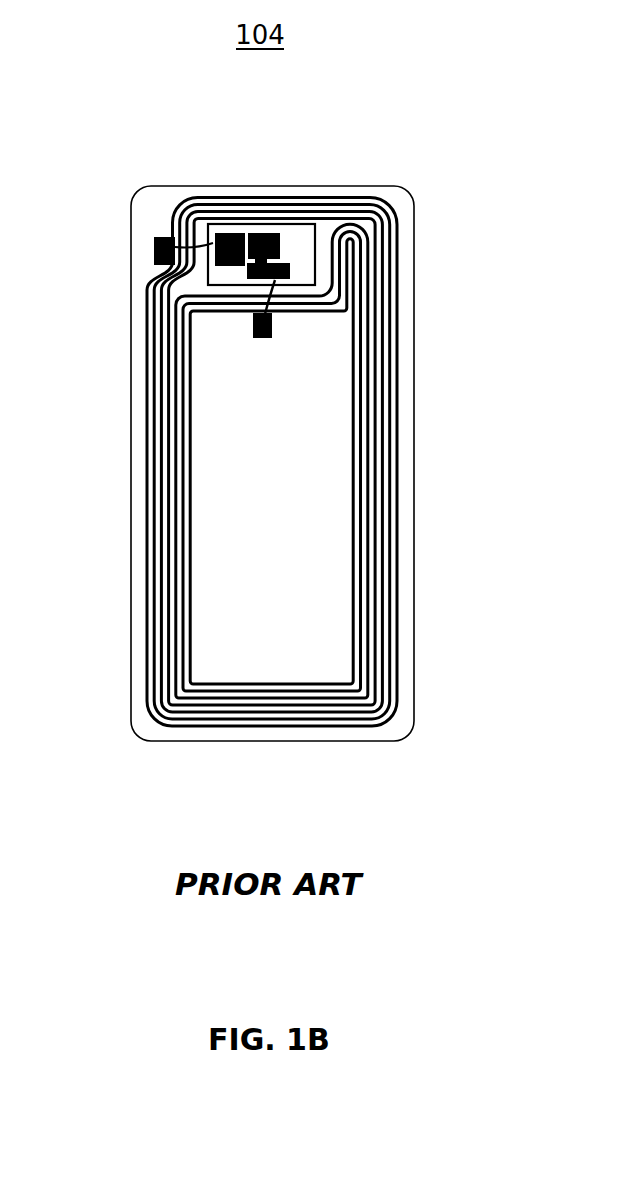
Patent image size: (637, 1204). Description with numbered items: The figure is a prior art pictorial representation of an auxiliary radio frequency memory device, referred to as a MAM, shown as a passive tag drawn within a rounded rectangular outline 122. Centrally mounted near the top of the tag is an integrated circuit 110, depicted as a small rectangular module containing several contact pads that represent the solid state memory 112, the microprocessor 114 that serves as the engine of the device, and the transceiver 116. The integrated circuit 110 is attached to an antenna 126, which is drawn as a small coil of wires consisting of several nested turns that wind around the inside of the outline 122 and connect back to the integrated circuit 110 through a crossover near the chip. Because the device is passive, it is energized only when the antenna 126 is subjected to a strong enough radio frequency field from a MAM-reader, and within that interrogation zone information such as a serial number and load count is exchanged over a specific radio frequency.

The integrated circuit 110 is at (293, 224).
The solid state memory 112 is at (293, 268).
The microprocessor 114 is at (223, 232).
The transceiver 116 is at (257, 232).
The substrate 122 is at (413, 445).
The antenna 126 is at (117, 411).